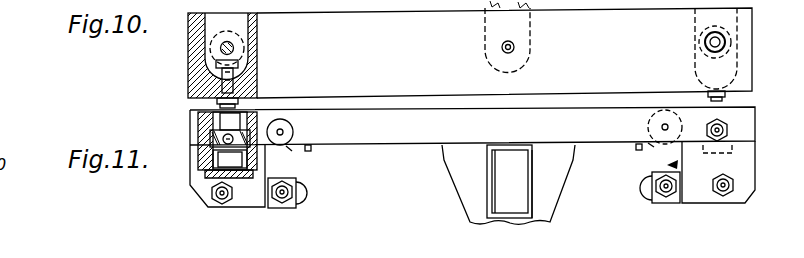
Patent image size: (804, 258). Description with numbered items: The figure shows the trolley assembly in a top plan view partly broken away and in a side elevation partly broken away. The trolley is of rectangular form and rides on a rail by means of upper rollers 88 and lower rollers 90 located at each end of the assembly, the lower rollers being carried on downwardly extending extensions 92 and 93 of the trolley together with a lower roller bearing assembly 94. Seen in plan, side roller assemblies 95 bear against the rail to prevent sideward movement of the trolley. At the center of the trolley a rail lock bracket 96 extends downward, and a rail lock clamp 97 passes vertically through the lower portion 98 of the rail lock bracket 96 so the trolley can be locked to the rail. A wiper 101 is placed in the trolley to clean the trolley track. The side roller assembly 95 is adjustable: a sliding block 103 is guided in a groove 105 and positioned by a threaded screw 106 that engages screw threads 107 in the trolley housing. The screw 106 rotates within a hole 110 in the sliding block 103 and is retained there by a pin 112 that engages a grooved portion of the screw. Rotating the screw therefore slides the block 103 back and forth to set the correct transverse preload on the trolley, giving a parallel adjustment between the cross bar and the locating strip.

In FIG. 11, the upper rollers 88 is at (290, 150).
In FIG. 11, the lower rollers 90 is at (290, 208).
In FIG. 11, the downwardly extending extension 92 is at (210, 197).
In FIG. 11, the downwardly extending extension 93 is at (742, 190).
In FIG. 11, the lower roller bearing assembly 94 is at (668, 165).
In FIG. 10, the side roller assemblies 95 is at (712, 42).
In FIG. 11, the rail lock bracket 96 is at (460, 170).
In FIG. 10, the rail lock clamp 97 is at (507, 37).
In FIG. 11, the rail lock clamp 97 is at (509, 181).
In FIG. 11, the lower portion of rail lock bracket 98 is at (534, 205).
In FIG. 11, the wiper 101 is at (310, 150).
In FIG. 10, the sliding block 103 is at (257, 50).
In FIG. 11, the sliding block 103 is at (215, 128).
In FIG. 10, the groove 105 is at (195, 46).
In FIG. 10, the threaded screw 106 is at (712, 99).
In FIG. 11, the threaded screw 106 is at (290, 130).
In FIG. 10, the screw threads 107 is at (205, 93).
In FIG. 10, the hole 110 is at (240, 77).
In FIG. 10, the pin 112 is at (200, 78).